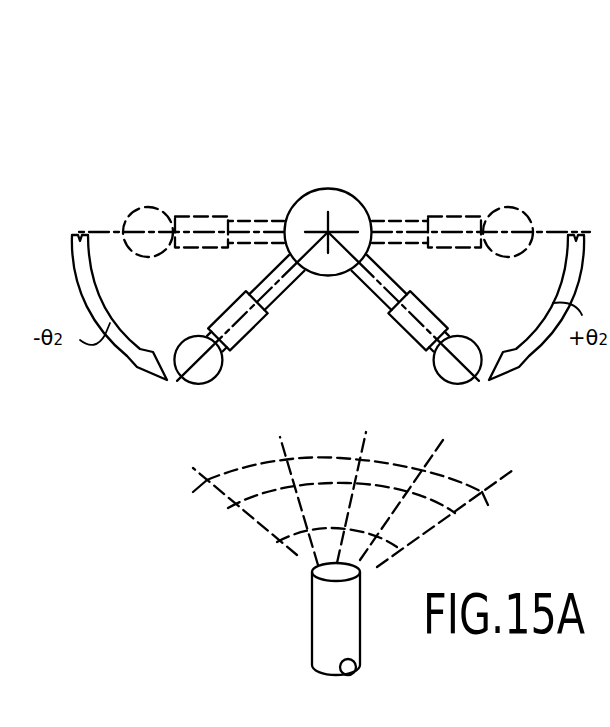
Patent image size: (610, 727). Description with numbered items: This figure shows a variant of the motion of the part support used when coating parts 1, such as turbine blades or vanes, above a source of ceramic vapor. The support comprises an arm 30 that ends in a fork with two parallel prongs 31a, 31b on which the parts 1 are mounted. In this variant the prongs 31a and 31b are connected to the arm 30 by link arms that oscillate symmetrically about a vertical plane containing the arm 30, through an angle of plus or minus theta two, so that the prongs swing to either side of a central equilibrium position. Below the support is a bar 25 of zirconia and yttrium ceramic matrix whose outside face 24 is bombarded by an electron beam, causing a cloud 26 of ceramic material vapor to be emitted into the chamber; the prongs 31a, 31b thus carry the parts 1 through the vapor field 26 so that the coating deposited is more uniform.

The arm 30 is at (347, 209).
The part 1 is at (450, 219).
The prong 31a is at (150, 215).
The prong 31b is at (512, 213).
The cloud of ceramic material vapor 26 is at (262, 525).
The outside face 24 is at (328, 573).
The bar 25 is at (318, 631).